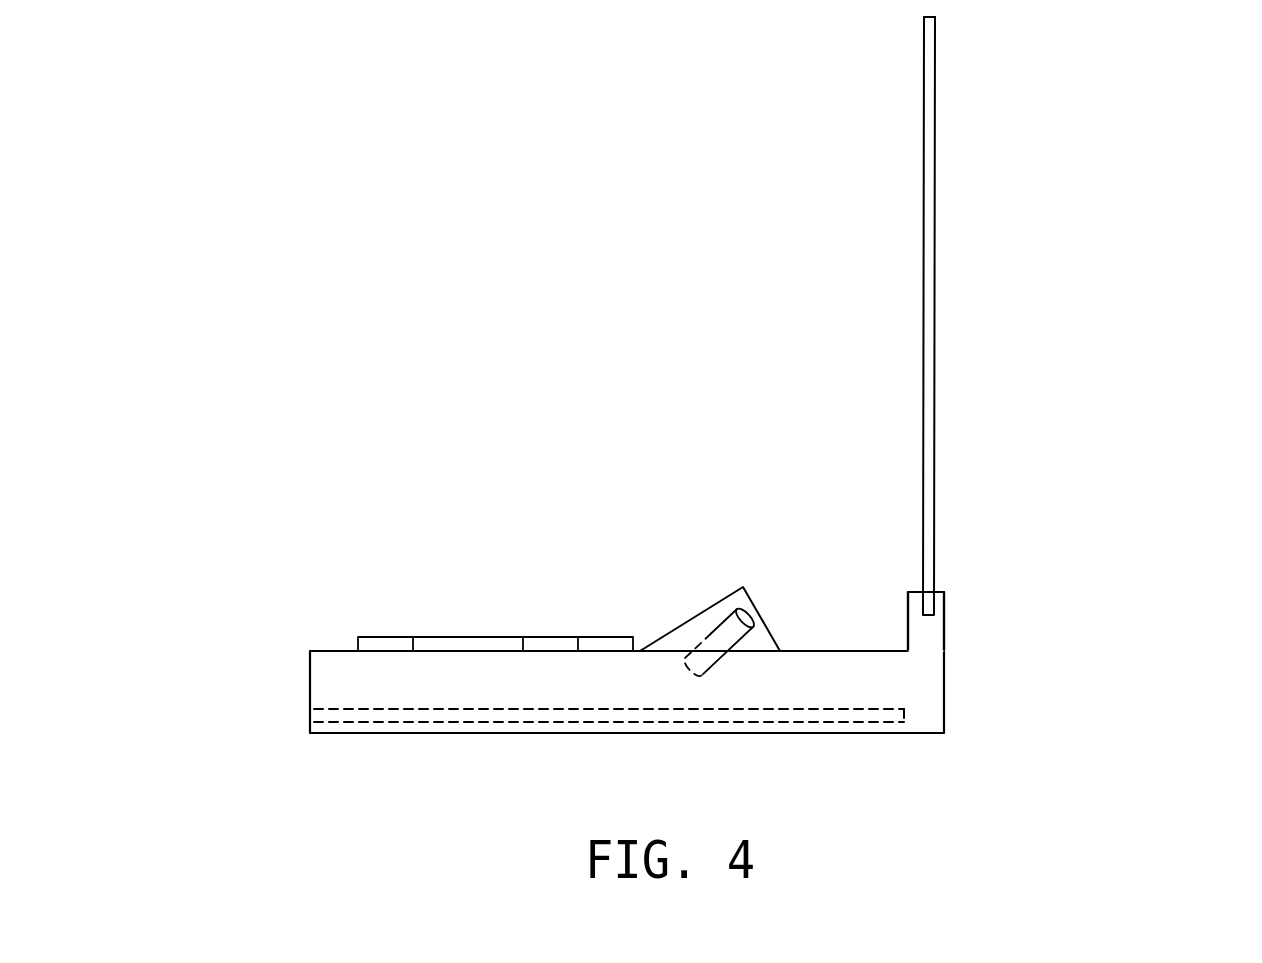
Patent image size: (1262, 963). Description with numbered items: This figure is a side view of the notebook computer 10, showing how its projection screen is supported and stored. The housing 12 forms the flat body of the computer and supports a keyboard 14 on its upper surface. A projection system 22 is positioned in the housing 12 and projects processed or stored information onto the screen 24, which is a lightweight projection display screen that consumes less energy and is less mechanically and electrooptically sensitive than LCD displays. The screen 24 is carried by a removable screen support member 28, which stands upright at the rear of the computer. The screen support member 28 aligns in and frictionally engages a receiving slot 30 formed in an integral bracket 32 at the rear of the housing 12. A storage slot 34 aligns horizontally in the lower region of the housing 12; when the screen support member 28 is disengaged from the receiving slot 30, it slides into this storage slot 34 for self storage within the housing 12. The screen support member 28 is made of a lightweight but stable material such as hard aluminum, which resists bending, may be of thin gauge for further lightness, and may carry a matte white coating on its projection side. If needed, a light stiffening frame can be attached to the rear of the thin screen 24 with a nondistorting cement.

The notebook computer 10 is at (1092, 110).
The housing 12 is at (580, 662).
The keyboard 14 is at (460, 623).
The projection system 22 is at (678, 629).
The screen 24 is at (848, 316).
The removable screen support member 28 is at (979, 38).
The receiving slot 30 is at (993, 610).
The integral bracket 32 is at (993, 635).
The storage slot 34 is at (594, 743).